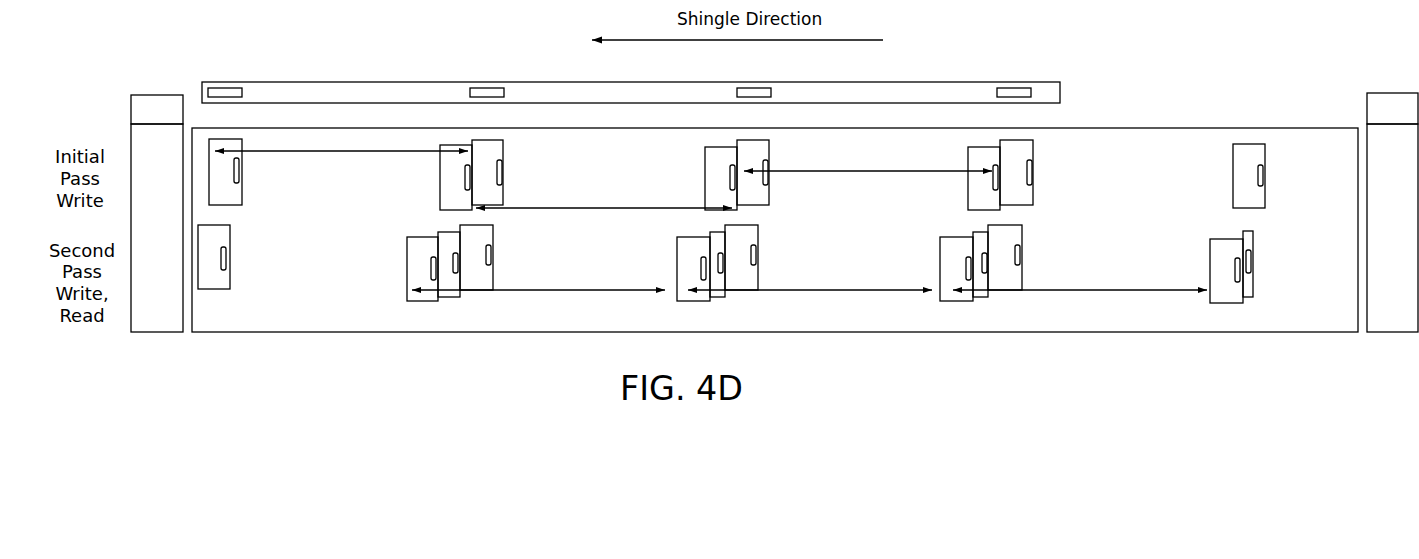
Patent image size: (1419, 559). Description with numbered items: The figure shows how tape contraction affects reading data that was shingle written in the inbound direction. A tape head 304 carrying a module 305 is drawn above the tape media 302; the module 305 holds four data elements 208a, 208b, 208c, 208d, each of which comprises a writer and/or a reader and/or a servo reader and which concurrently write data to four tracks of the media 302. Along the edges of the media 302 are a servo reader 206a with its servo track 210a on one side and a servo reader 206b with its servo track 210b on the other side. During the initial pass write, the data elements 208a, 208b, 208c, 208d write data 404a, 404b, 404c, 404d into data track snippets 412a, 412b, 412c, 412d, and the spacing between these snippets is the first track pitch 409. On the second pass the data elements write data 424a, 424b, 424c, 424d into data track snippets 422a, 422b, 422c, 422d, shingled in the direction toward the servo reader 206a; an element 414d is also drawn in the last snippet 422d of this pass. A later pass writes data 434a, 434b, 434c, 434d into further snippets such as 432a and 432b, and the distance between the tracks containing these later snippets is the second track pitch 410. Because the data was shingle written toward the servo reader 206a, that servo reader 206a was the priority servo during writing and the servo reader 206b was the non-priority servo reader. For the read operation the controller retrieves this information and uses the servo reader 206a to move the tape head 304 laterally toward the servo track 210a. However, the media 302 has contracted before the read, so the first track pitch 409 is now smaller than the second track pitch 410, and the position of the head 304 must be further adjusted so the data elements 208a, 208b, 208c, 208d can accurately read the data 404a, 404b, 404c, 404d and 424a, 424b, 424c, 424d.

The tape media 302 is at (1247, 336).
The tape head 304 is at (1064, 94).
The module 305 is at (198, 82).
The data element 208a is at (225, 89).
The data element 208b is at (487, 89).
The data element 208c is at (752, 89).
The data element 208d is at (1012, 89).
The servo reader 206a is at (178, 121).
The servo reader 206b is at (1414, 121).
The servo track 210a is at (178, 237).
The servo track 210b is at (1414, 237).
The first track pitch 409 is at (338, 154).
The second track pitch 410 is at (580, 290).
The data track snippet 412a is at (235, 197).
The data track snippet 412b is at (500, 148).
The data track snippet 412c is at (770, 149).
The data track snippet 412d is at (1030, 149).
The data 404a is at (240, 174).
The data 404b is at (504, 176).
The data 404c is at (770, 180).
The data 404d is at (1034, 168).
The data track snippet 422a is at (447, 196).
The data track snippet 422b is at (715, 182).
The data track snippet 422c is at (975, 192).
The data track snippet 422d is at (1240, 190).
The data 424a is at (460, 172).
The data 424b is at (725, 170).
The data 424c is at (1000, 182).
The data 424d is at (1252, 255).
The element d 414d is at (1265, 175).
The data track snippet 432a is at (415, 298).
The data track snippet 432b is at (688, 298).
The data 434a is at (430, 272).
The data 434b is at (700, 272).
The data 434c is at (965, 272).
The data 434d is at (1233, 268).